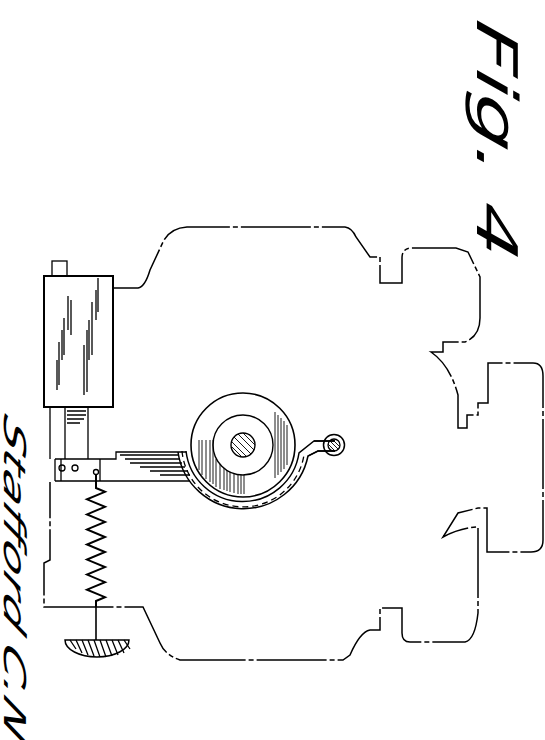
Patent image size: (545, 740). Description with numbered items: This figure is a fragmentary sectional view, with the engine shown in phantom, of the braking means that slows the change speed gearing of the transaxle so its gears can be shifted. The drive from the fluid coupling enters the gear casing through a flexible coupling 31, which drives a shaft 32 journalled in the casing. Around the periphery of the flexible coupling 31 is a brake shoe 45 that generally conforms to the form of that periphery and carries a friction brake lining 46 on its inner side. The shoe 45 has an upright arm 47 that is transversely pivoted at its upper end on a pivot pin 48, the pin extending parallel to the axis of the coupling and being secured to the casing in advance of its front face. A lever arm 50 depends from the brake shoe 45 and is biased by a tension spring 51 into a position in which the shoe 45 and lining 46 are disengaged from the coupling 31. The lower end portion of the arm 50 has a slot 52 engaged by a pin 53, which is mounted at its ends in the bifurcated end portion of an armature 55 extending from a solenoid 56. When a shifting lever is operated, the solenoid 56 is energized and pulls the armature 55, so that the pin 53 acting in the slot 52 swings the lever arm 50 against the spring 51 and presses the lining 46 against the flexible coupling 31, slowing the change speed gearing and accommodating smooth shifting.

The flexible coupling 31 is at (255, 392).
The shaft 32 is at (241, 436).
The brake shoe 45 is at (272, 506).
The friction brake lining 46 is at (232, 498).
The upright arm 47 is at (325, 457).
The pivot pin 48 is at (345, 450).
The lever arm 50 is at (140, 482).
The tension spring 51 is at (105, 556).
The slot 52 is at (58, 470).
The pin 53 is at (76, 471).
The armature 55 is at (88, 426).
The solenoid 56 is at (113, 337).